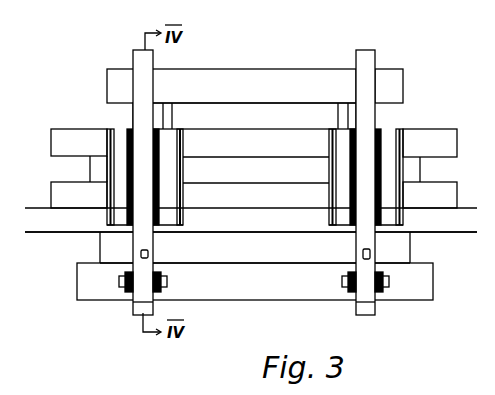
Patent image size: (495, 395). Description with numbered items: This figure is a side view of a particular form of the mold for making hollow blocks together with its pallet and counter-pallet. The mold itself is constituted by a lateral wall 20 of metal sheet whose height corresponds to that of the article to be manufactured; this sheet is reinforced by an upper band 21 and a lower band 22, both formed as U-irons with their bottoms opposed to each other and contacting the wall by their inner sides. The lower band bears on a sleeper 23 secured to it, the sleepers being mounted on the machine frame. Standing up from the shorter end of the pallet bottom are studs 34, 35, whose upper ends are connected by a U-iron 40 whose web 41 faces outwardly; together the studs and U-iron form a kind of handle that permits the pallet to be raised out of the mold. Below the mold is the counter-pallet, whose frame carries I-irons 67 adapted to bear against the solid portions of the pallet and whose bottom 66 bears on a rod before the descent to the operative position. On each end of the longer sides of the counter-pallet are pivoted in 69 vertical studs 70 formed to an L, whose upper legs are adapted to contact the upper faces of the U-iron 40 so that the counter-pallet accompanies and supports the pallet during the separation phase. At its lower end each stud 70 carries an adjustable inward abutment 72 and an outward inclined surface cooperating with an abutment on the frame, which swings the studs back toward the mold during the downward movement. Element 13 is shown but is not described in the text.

The frame side member 13 is at (443, 118).
The lateral wall 20 is at (90, 167).
The upper band 21 is at (72, 138).
The lower band 22 is at (58, 193).
The sleeper 23 is at (55, 228).
The stud 34 is at (173, 117).
The stud 35 is at (340, 117).
The U-iron 40 is at (309, 66).
The web 41 is at (392, 85).
The bottom 66 is at (93, 294).
The I-iron 67 is at (252, 264).
The pivot 69 is at (123, 281).
The vertical stud 70 is at (138, 117).
The adjustable inward abutment 72 is at (150, 253).